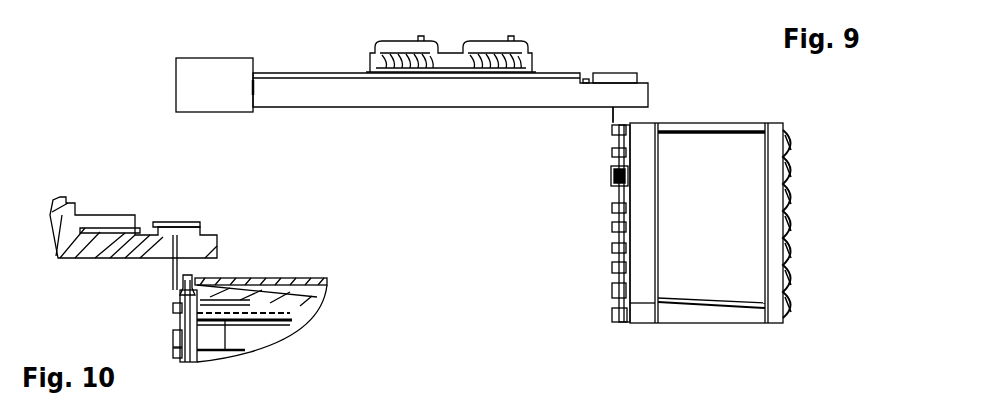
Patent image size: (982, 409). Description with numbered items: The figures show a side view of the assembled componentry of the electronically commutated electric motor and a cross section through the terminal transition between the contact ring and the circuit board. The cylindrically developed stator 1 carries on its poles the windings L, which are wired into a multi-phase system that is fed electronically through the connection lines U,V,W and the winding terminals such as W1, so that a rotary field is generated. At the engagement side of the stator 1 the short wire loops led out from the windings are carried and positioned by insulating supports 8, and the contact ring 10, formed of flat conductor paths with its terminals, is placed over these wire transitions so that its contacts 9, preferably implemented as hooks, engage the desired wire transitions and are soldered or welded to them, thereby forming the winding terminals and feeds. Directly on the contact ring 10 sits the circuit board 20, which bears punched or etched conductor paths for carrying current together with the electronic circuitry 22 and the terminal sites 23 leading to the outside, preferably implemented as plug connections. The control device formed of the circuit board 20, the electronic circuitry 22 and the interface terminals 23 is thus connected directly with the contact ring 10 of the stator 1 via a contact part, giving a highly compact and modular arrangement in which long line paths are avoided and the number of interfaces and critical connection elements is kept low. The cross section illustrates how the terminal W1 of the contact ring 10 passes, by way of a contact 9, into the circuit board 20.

In FIG. 9, the stator 1 is at (715, 232).
In FIG. 9, the insulating supports 8 is at (612, 152).
In FIG. 9, the contacts 9 is at (613, 177).
In FIG. 10, the contacts 9 is at (175, 332).
In FIG. 9, the contact ring 10 is at (613, 226).
In FIG. 10, the contact ring 10 is at (177, 355).
In FIG. 9, the circuit board 20 is at (303, 92).
In FIG. 9, the electronic circuitry 22 is at (450, 60).
In FIG. 9, the terminal sites 23 is at (220, 88).
In FIG. 9, the windings L is at (792, 148).
In FIG. 9, the connection lines U,V,W is at (609, 118).
In FIG. 10, the winding terminal W1 is at (163, 228).